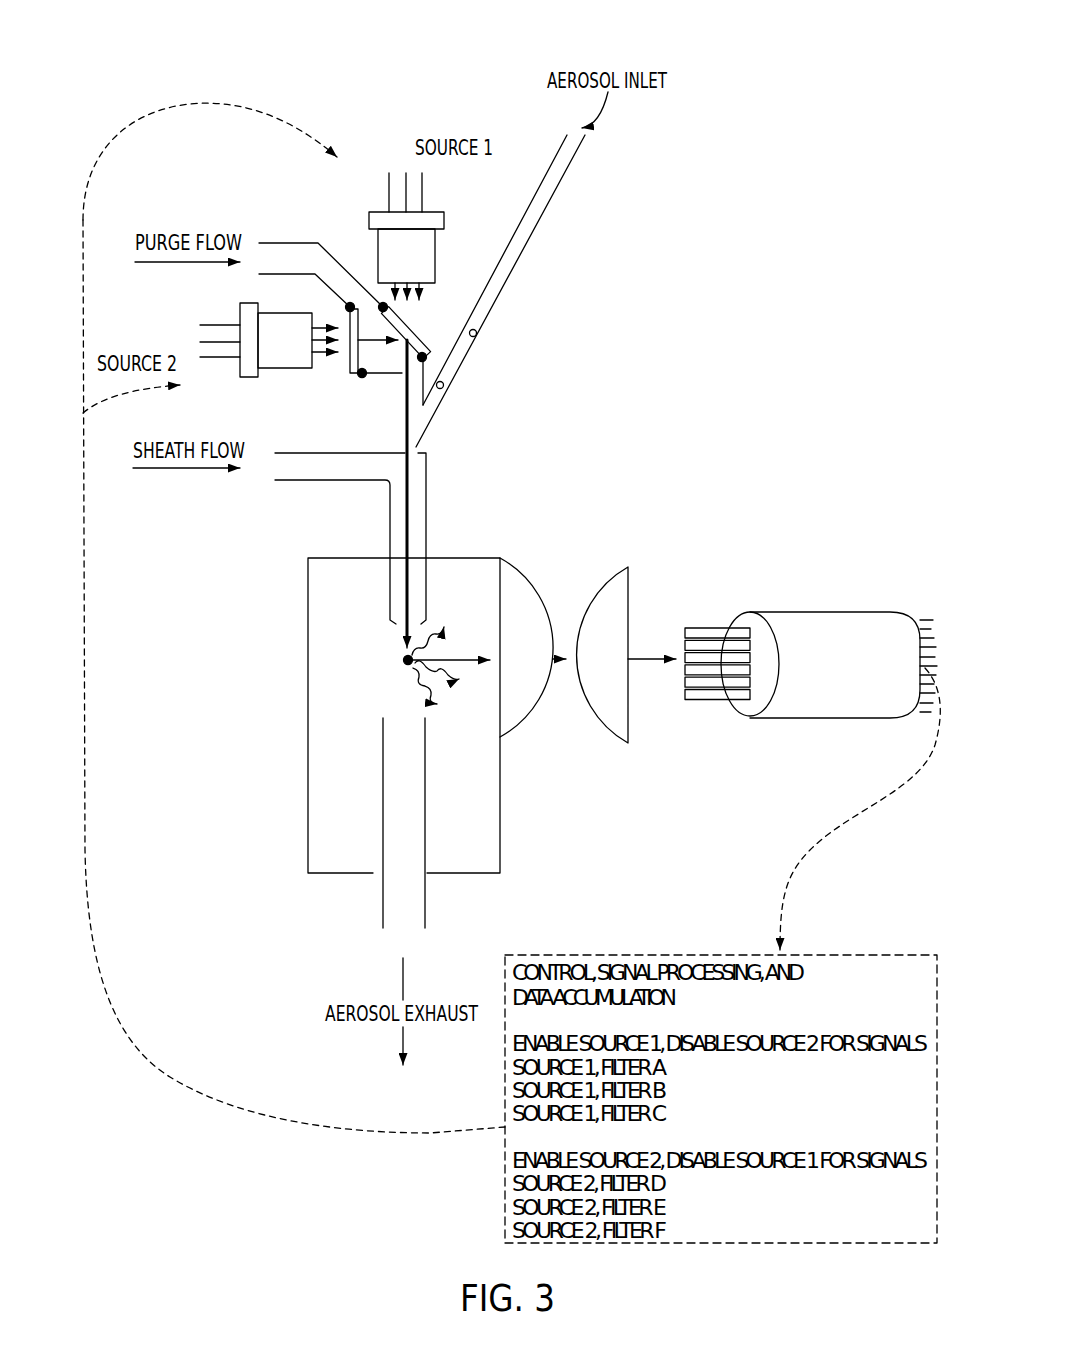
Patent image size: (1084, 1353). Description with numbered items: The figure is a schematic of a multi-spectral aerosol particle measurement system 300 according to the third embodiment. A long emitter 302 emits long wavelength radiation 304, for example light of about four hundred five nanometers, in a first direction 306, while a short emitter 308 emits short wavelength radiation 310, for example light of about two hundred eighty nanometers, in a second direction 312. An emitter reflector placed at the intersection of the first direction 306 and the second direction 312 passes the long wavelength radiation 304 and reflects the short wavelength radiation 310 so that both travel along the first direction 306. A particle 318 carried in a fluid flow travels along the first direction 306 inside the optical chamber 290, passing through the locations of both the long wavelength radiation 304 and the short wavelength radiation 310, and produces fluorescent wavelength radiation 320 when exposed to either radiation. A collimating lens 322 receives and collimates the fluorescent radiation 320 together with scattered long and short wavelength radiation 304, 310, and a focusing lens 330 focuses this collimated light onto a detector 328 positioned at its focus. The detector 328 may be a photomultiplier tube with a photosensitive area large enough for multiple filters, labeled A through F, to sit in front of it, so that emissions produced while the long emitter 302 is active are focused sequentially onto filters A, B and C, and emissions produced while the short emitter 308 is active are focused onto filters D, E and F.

The multi-spectral aerosol particle measurement system 300 is at (150, 76).
The long emitter 302 is at (423, 253).
The long wavelength radiation 304 is at (420, 290).
The first direction 306 is at (420, 307).
The short emitter 308 is at (287, 353).
The short wavelength radiation 310 is at (322, 353).
The second direction 312 is at (336, 355).
The particle 318 is at (405, 661).
The fluorescent wavelength radiation 320 is at (480, 665).
The collimating lens 322 is at (502, 718).
The focusing lens 330 is at (618, 602).
The detector 328 is at (862, 625).
The optical chamber 290 is at (308, 730).